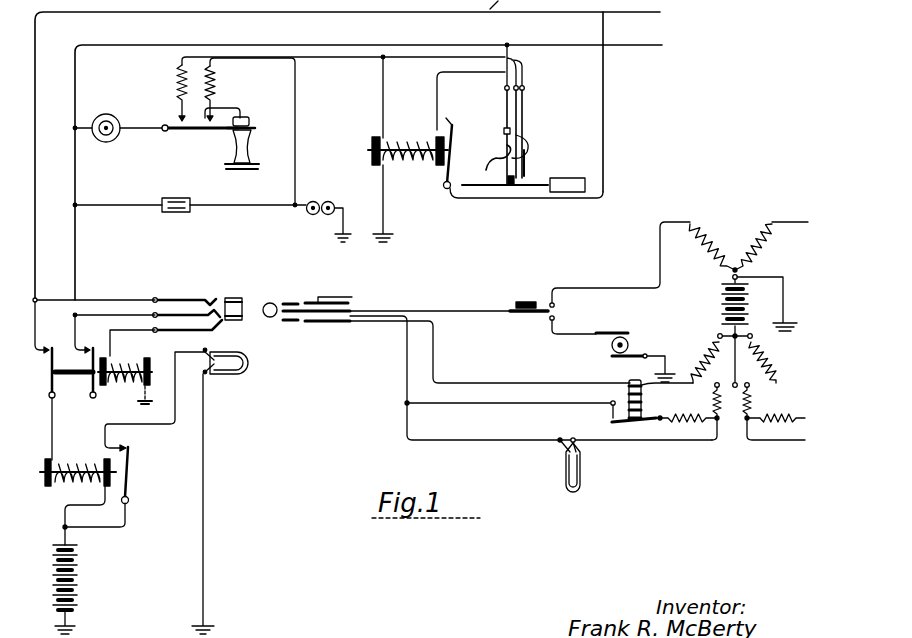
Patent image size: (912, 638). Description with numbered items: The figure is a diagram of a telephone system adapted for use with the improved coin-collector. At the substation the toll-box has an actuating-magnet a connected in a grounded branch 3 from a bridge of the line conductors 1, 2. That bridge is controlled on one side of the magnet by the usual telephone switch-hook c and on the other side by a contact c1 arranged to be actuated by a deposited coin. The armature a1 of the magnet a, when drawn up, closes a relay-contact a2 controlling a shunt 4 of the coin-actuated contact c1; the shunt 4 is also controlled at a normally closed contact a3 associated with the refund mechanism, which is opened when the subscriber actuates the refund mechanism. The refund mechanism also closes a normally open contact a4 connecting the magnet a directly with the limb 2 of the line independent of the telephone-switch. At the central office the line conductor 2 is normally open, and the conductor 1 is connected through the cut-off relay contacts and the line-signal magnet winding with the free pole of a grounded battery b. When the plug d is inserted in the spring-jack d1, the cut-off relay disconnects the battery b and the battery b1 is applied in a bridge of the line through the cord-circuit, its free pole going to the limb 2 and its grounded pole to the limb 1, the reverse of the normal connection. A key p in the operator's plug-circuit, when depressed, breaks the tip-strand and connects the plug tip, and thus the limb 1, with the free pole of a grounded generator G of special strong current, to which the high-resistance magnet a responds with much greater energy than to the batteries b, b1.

The line conductor 1 is at (335, 150).
The line conductor 2 is at (367, 162).
The grounded branch 3 is at (392, 148).
The shunt 4 is at (485, 72).
The actuating-magnet a is at (408, 139).
The armature a1 is at (455, 128).
The relay-contact a2 is at (444, 111).
The normally closed contact a3 is at (523, 158).
The normally open contact a4 is at (506, 138).
The contact spring m is at (520, 122).
The telephone switch-hook c is at (290, 131).
The coin-actuated contact c1 is at (523, 148).
The spring n is at (493, 157).
The plug d is at (487, 360).
The spring-jack d1 is at (137, 315).
The key p is at (598, 278).
The grounded generator G is at (635, 354).
The grounded battery b is at (78, 592).
The battery b1 is at (748, 331).